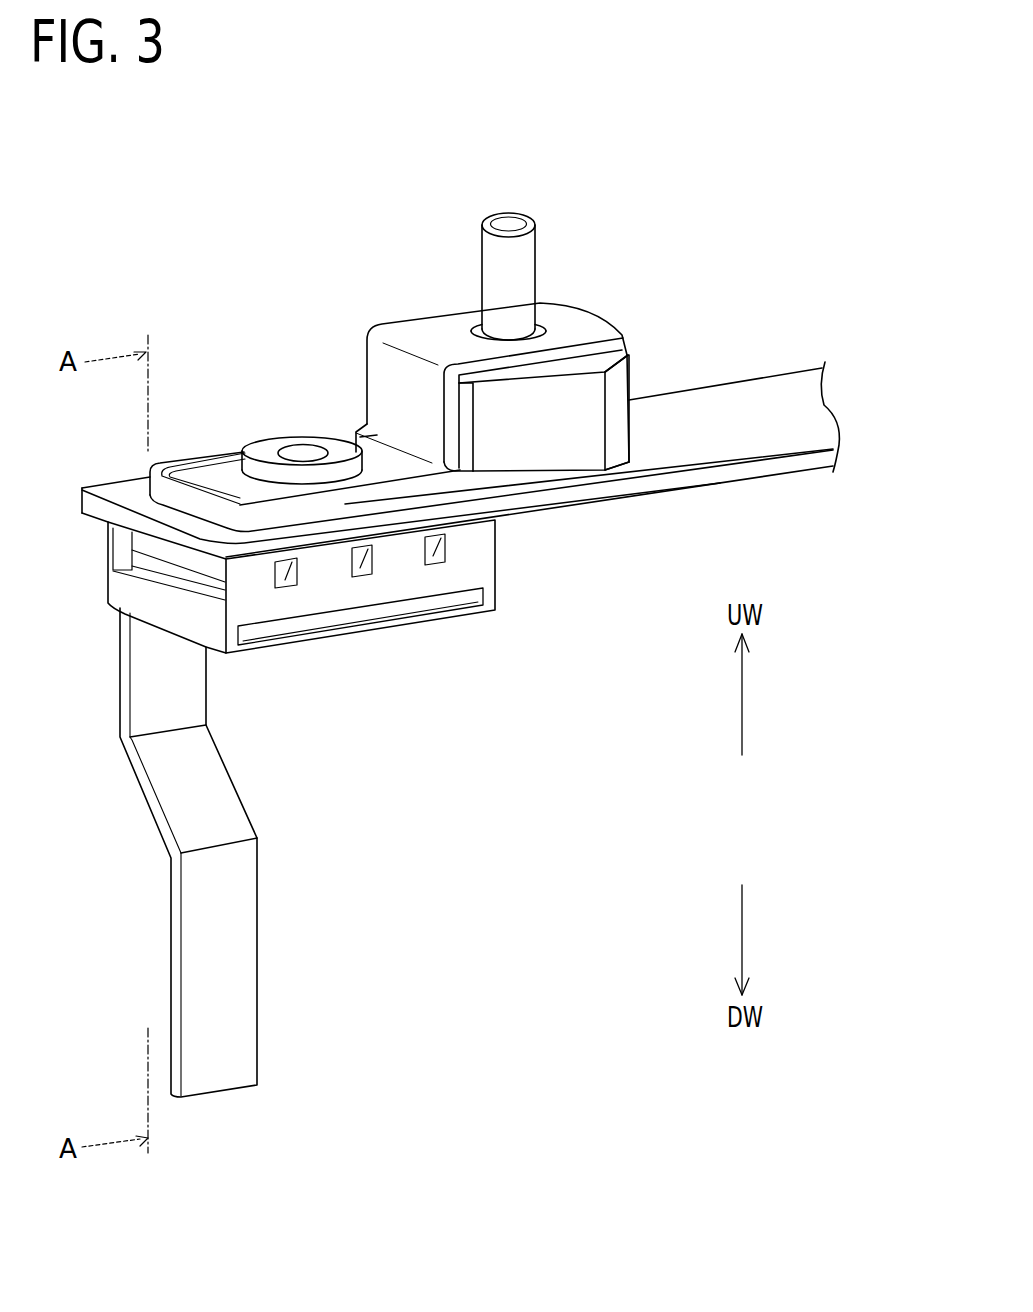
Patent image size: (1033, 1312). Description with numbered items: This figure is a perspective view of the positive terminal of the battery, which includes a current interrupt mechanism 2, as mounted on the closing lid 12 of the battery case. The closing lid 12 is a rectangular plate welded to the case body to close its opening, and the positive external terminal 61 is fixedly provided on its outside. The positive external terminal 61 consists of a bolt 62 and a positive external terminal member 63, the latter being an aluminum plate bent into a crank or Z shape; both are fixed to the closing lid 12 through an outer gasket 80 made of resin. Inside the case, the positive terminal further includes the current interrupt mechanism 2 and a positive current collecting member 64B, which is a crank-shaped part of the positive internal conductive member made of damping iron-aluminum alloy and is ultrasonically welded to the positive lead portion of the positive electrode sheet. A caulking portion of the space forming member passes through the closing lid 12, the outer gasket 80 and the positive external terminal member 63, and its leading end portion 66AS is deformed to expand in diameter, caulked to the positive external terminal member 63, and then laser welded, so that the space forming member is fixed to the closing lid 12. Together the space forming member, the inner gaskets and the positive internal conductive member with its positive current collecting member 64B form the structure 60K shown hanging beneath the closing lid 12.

The current interrupt mechanism 2 is at (378, 635).
The closing lid 12 is at (678, 462).
The structure 60K is at (298, 725).
The positive external terminal 61 is at (421, 128).
The bolt 62 is at (490, 227).
The positive external terminal member 63 is at (420, 325).
The positive current collecting member 64B is at (235, 966).
The leading end portion 66AS is at (270, 445).
The outer gasket 80 is at (622, 374).